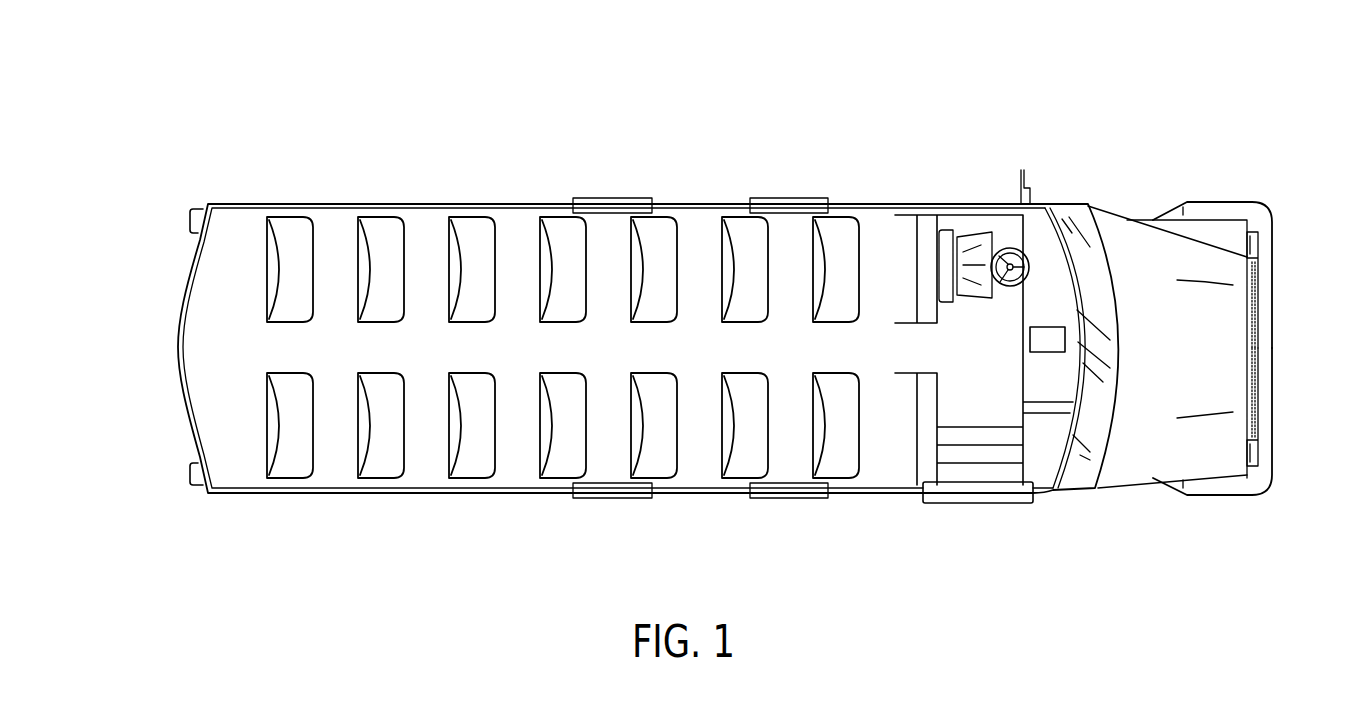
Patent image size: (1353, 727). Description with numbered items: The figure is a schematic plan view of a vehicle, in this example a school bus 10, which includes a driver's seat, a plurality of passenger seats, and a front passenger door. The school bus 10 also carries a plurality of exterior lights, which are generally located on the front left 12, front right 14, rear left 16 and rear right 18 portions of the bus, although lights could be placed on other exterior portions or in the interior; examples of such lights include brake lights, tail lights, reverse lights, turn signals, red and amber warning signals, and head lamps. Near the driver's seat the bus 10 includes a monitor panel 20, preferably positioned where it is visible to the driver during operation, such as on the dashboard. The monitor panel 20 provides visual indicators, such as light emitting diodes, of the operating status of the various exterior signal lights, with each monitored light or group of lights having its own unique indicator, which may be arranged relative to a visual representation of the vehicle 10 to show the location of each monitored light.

The school bus 10 is at (712, 260).
The front left portion 12 is at (1253, 224).
The front right portion 14 is at (1250, 474).
The rear left portion 16 is at (157, 167).
The rear right portion 18 is at (157, 532).
The monitor panel 20 is at (1040, 327).